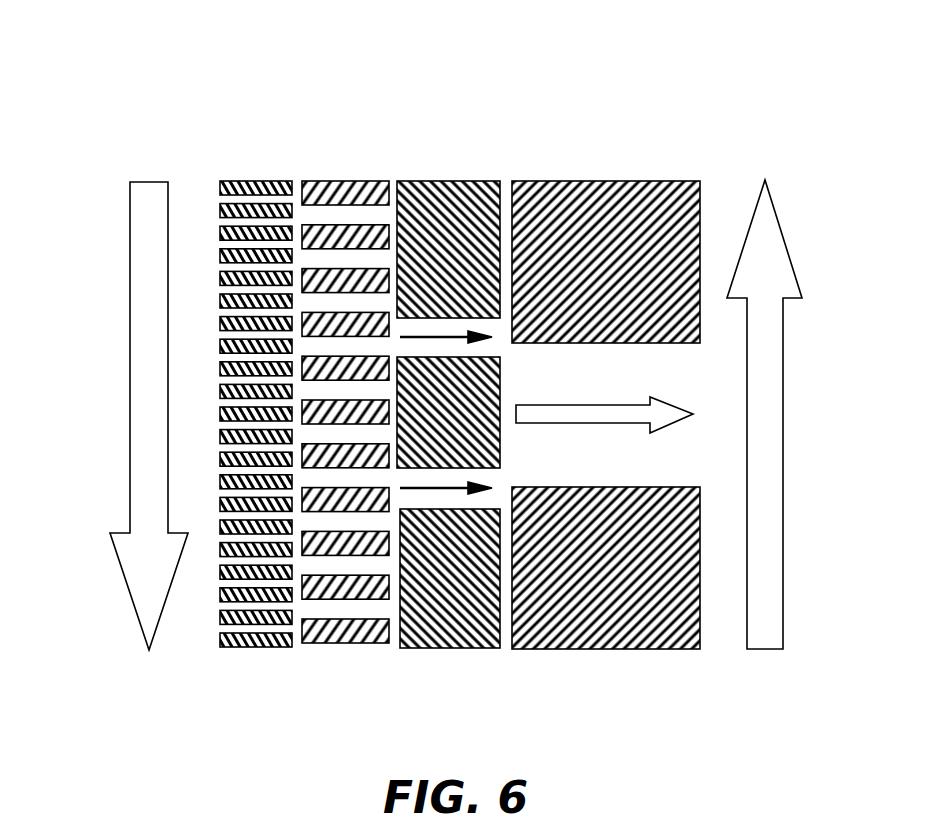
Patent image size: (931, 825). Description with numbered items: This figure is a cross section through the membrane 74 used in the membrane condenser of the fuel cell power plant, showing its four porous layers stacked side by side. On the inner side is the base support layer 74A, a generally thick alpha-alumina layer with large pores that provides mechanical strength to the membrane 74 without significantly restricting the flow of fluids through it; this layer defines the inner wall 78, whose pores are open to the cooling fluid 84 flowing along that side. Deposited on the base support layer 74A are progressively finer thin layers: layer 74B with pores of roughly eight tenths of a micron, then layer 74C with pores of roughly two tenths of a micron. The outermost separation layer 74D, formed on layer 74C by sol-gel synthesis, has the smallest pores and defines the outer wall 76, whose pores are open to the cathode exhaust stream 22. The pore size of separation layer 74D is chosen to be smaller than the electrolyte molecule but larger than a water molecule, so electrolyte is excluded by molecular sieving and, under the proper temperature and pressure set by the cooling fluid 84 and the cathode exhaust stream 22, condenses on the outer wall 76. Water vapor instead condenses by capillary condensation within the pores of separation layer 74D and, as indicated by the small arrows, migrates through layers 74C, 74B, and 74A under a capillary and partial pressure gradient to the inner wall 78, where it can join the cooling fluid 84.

The cathode exhaust stream 22 is at (205, 112).
The membrane 74 is at (708, 112).
The base support layer 74A is at (707, 180).
The porous layer 74B is at (503, 180).
The porous layer 74C is at (391, 180).
The separation layer 74D is at (216, 180).
The outer wall 76 is at (221, 641).
The inner wall 78 is at (699, 641).
The cooling fluid 84 is at (866, 112).